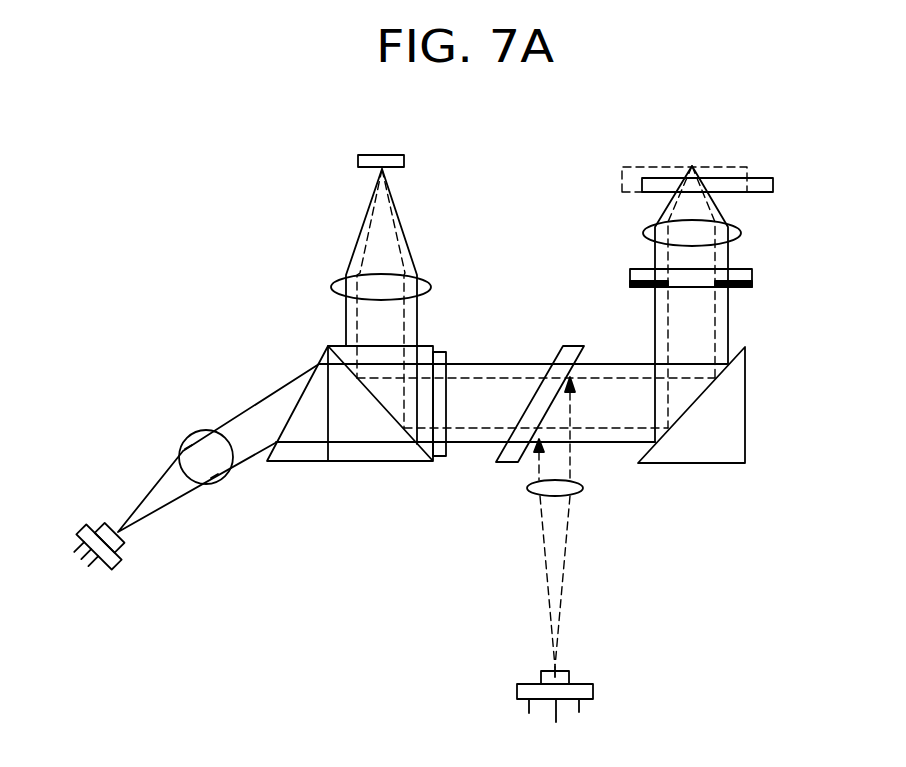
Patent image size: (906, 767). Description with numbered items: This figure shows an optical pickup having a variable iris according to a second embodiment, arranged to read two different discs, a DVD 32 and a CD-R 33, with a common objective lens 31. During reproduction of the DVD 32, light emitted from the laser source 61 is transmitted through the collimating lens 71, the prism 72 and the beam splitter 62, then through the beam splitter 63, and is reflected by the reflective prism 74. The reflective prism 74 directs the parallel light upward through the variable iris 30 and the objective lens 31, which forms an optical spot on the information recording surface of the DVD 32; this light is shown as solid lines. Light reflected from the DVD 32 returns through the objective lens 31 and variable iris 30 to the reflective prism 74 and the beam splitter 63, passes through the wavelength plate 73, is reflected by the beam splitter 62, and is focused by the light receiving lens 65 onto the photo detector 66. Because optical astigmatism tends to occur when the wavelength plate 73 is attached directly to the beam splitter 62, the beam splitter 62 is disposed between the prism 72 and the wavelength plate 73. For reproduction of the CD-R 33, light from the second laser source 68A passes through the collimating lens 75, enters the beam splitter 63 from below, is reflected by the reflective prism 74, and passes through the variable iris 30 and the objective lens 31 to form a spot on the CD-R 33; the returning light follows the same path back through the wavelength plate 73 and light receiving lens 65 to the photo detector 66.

The laser source 61 is at (82, 526).
The collimating lens 71 is at (188, 440).
The prism 72 is at (297, 463).
The beam splitter 62 is at (377, 463).
The wavelength plate 73 is at (440, 351).
The light receiving lens 65 is at (331, 289).
The photo detector 66 is at (358, 162).
The beam splitter 63 is at (575, 346).
The reflective prism 74 is at (746, 402).
The objective lens 31 is at (741, 233).
The variable iris 30 is at (752, 275).
The DVD 32 is at (773, 185).
The CD-R 33 is at (622, 185).
The collimating lens 75 is at (583, 488).
The laser source 68A is at (593, 690).